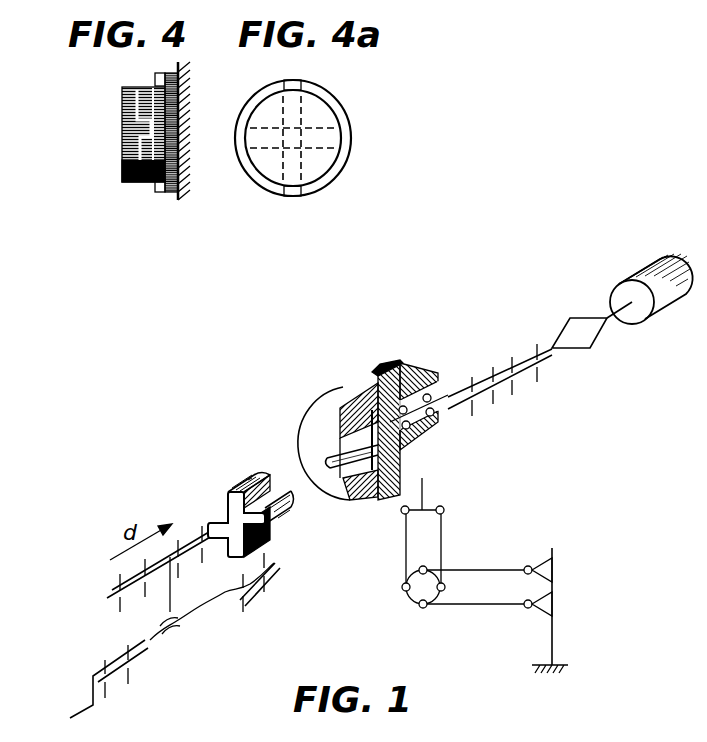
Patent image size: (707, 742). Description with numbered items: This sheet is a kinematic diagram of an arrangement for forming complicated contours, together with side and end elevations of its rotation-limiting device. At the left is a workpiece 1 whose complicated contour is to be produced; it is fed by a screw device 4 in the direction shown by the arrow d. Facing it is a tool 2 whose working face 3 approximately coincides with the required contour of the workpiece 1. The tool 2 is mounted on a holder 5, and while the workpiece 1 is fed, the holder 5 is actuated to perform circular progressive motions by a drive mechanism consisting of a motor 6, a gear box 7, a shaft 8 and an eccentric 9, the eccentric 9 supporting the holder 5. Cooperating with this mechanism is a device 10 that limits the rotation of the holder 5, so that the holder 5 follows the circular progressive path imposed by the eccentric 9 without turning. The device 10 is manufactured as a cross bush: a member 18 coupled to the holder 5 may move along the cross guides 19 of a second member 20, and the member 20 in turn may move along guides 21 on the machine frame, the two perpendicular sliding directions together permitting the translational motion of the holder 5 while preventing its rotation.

In FIG. 1, the workpiece 1 is at (232, 490).
In FIG. 1, the tool 2 is at (348, 382).
In FIG. 1, the working face 3 is at (345, 434).
In FIG. 1, the screw device 4 is at (150, 636).
In FIG. 1, the holder 5 is at (405, 362).
In FIG. 1, the motor 6 is at (642, 272).
In FIG. 1, the gear box 7 is at (597, 342).
In FIG. 1, the shaft 8 is at (548, 356).
In FIG. 1, the eccentric 9 is at (450, 394).
In FIG. 4, the device for limiting holder rotation 10 is at (140, 184).
In FIG. 4A, the device for limiting holder rotation 10 is at (345, 162).
In FIG. 1, the device for limiting holder rotation 10 is at (495, 568).
In FIG. 4, the member 18 is at (124, 180).
In FIG. 4A, the cross guides 19 is at (300, 130).
In FIG. 4, the member 20 is at (138, 110).
In FIG. 4, the guides 21 is at (157, 78).